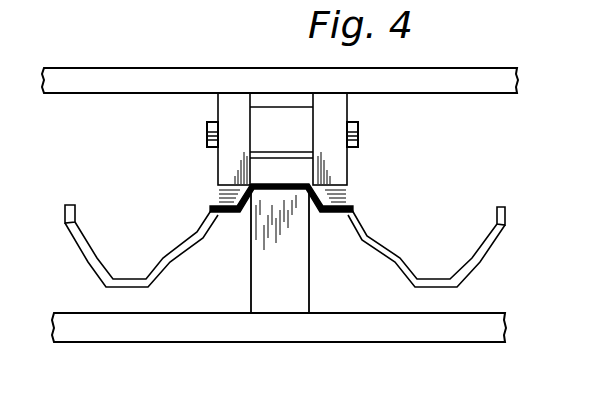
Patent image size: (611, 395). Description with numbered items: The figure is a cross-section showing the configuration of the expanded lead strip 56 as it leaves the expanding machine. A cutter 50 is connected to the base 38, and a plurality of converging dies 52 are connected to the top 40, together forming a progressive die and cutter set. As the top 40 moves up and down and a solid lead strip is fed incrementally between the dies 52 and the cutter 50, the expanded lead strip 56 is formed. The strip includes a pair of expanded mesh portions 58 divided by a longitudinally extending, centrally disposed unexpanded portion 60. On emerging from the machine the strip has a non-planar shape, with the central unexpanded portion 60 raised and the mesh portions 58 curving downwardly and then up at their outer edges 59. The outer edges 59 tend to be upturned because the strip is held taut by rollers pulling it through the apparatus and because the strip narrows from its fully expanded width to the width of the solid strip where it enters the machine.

The base 38 is at (152, 335).
The top 40 is at (73, 72).
The cutter 50 is at (302, 281).
The converging dies 52 is at (222, 168).
The expanded lead strip 56 is at (284, 232).
The expanded mesh portions 58 is at (73, 242).
The outer edges 59 is at (67, 207).
The unexpanded portion 60 is at (268, 190).